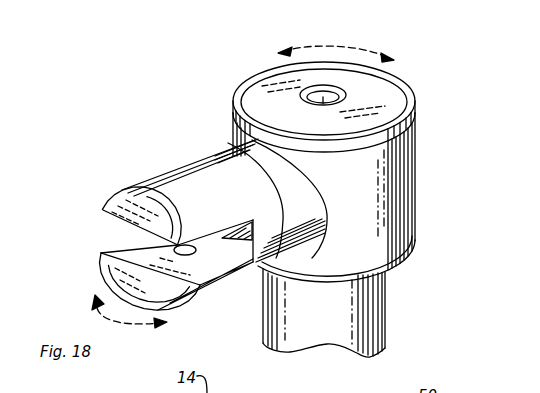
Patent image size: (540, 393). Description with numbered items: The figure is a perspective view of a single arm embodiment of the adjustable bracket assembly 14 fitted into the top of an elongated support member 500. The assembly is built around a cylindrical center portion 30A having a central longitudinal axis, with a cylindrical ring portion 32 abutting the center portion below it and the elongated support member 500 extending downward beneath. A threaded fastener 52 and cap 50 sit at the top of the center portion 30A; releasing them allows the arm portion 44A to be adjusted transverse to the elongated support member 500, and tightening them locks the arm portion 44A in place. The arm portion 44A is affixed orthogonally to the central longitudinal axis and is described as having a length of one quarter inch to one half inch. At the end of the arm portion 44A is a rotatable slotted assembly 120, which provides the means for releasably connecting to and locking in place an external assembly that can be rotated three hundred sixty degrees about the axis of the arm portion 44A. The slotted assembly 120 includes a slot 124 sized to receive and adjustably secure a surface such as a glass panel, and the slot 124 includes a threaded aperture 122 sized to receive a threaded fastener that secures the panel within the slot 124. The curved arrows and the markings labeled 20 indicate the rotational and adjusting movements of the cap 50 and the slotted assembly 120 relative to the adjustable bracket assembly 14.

The adjustable bracket assembly 14 is at (187, 88).
The direction of movement 20 is at (490, 132).
The cylindrical center portion 30A is at (400, 157).
The cylindrical ring portion 32 is at (405, 213).
The arm portion 44A is at (232, 147).
The cap 50 is at (270, 82).
The threaded fastener 52 is at (256, 90).
The slotted assembly 120 is at (167, 172).
The threaded aperture 122 is at (188, 283).
The slot 124 is at (128, 248).
The elongated support member 500 is at (373, 325).